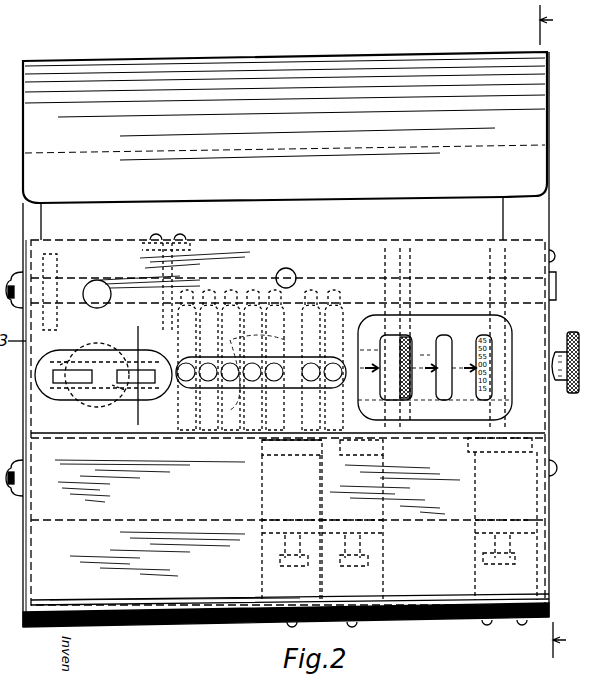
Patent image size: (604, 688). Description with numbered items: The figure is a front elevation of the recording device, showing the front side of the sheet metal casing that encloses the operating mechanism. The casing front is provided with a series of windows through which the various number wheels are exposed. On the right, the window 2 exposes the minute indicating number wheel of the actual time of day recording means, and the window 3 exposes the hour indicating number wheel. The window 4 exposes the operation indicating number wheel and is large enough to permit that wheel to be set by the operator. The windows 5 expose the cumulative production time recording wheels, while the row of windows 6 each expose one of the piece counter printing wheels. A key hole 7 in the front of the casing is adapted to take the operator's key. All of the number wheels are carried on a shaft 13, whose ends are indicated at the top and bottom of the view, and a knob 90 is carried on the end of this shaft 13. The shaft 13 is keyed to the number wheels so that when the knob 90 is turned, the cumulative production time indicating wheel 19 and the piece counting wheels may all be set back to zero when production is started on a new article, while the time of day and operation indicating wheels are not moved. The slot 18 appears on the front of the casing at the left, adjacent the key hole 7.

The window 2 is at (488, 340).
The window 3 is at (440, 400).
The window 4 is at (393, 400).
The windows 5 is at (300, 433).
The windows 6 is at (252, 382).
The key hole 7 is at (143, 372).
The shaft 13 is at (565, 331).
The slide 18 is at (0, 383).
The cumulative production time indicating wheel 19 is at (130, 418).
The knob 90 is at (572, 332).